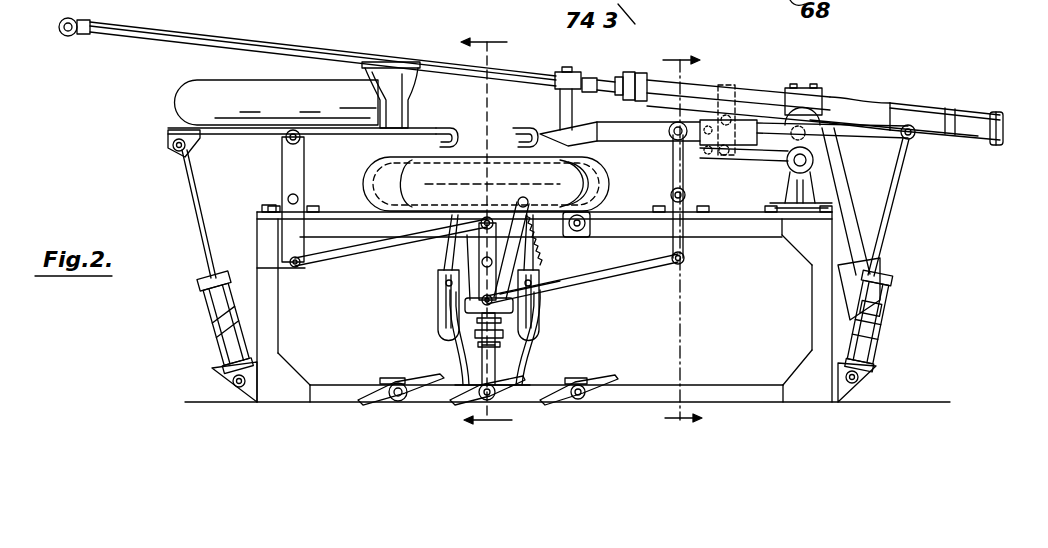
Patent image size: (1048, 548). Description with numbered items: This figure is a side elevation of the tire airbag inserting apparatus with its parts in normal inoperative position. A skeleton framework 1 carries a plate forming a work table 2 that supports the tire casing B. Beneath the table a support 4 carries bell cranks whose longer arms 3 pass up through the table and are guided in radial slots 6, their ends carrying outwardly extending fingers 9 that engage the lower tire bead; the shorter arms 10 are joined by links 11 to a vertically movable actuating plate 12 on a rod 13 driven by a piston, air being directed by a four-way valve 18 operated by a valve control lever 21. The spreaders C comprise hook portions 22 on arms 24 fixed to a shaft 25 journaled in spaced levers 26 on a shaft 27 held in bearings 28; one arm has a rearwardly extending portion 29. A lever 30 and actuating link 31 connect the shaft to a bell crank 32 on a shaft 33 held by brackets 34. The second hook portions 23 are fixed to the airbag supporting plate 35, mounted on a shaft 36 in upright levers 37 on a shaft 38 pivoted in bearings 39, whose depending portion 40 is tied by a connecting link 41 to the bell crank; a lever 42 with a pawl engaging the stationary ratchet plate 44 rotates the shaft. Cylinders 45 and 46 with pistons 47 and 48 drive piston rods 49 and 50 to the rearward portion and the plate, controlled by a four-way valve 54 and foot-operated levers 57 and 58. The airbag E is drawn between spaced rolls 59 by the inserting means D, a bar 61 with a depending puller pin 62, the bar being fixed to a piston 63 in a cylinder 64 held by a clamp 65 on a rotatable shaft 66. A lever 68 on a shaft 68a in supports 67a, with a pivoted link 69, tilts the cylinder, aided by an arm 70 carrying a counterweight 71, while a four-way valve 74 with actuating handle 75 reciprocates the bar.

The skeleton framework 1 is at (812, 320).
The work table 2 is at (325, 212).
The longer arms of bell cranks 3 is at (460, 238).
The support 4 is at (496, 232).
The radial slots 6 is at (667, 240).
The outwardly extending fingers 9 is at (428, 186).
The shorter arms of bell cranks 10 is at (466, 306).
The links 11 is at (555, 292).
The actuating plate 12 is at (513, 306).
The rod 13 is at (505, 333).
The four-way valve 18 is at (516, 362).
The valve control lever 21 is at (470, 398).
The hook portions 22 is at (526, 122).
The hook portions 23 is at (445, 128).
The arms 24 is at (600, 123).
The shaft 25 is at (703, 80).
The spaced levers 26 is at (672, 178).
The shaft 27 is at (672, 193).
The bearings 28 is at (705, 212).
The rearwardly extending portion 29 is at (862, 120).
The lever 30 is at (686, 258).
The actuating link 31 is at (638, 272).
The bell crank 32 is at (476, 306).
The shaft 33 is at (478, 262).
The brackets 34 is at (468, 246).
The airbag supporting plate 35 is at (230, 133).
The shaft 36 is at (304, 142).
The upright levers 37 is at (282, 173).
The shaft 38 is at (282, 198).
The bearings 39 is at (260, 211).
The depending portion 40 is at (290, 270).
The connecting link 41 is at (352, 260).
The lever 42 is at (522, 238).
The stationary ratchet plate 44 is at (515, 268).
The fluid pressure cylinder 45 is at (892, 284).
The fluid pressure cylinder 46 is at (212, 305).
The piston 47 is at (872, 345).
The piston 48 is at (222, 342).
The piston rod 49 is at (889, 213).
The piston rod 50 is at (188, 179).
The four-way valve 54 is at (405, 396).
The operating lever 57 is at (605, 381).
The operating lever 58 is at (382, 387).
The spaced rolls 59 is at (373, 62).
The bar 61 is at (162, 36).
The puller pin 62 is at (560, 100).
The piston 63 is at (968, 137).
The fluid pressure cylinder 64 is at (972, 112).
The clamp 65 is at (822, 90).
The rotatable shaft 66 is at (815, 143).
The supports 67a is at (813, 173).
The lever 68 is at (745, 156).
The shaft 68a is at (810, 185).
The pivoted link 69 is at (735, 125).
The arm 70 is at (858, 262).
The counterweight 71 is at (884, 320).
The four-way valve 74 is at (592, 227).
The actuating handle 75 is at (588, 220).
The tire casing B is at (365, 185).
The spreaders C is at (435, 140).
The airbag inserting means D is at (598, 69).
The airbag E is at (262, 78).